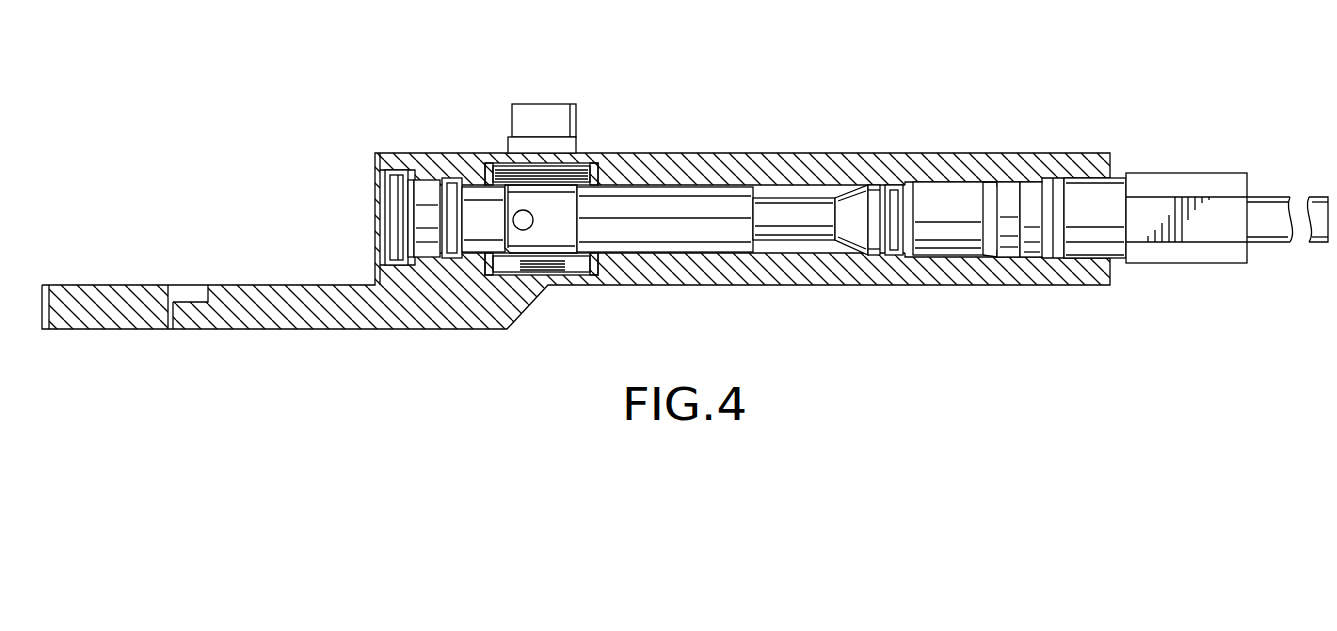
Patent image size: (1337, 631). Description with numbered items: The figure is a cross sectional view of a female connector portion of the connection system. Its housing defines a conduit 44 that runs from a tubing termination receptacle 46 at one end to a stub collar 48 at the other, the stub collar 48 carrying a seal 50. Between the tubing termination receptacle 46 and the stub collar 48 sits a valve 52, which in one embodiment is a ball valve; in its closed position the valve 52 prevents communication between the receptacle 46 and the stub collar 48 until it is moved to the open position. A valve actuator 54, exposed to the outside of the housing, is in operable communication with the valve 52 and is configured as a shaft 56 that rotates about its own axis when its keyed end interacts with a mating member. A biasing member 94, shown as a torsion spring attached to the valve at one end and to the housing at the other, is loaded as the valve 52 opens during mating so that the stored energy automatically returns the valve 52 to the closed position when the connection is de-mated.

The conduit 44 is at (795, 198).
The tubing termination receptacle 46 is at (1013, 180).
The stub collar 48 is at (403, 225).
The seal 50 is at (388, 258).
The valve 52 is at (567, 230).
The valve actuator 54 is at (535, 120).
The shaft 56 is at (555, 145).
The biasing member 94 is at (552, 265).